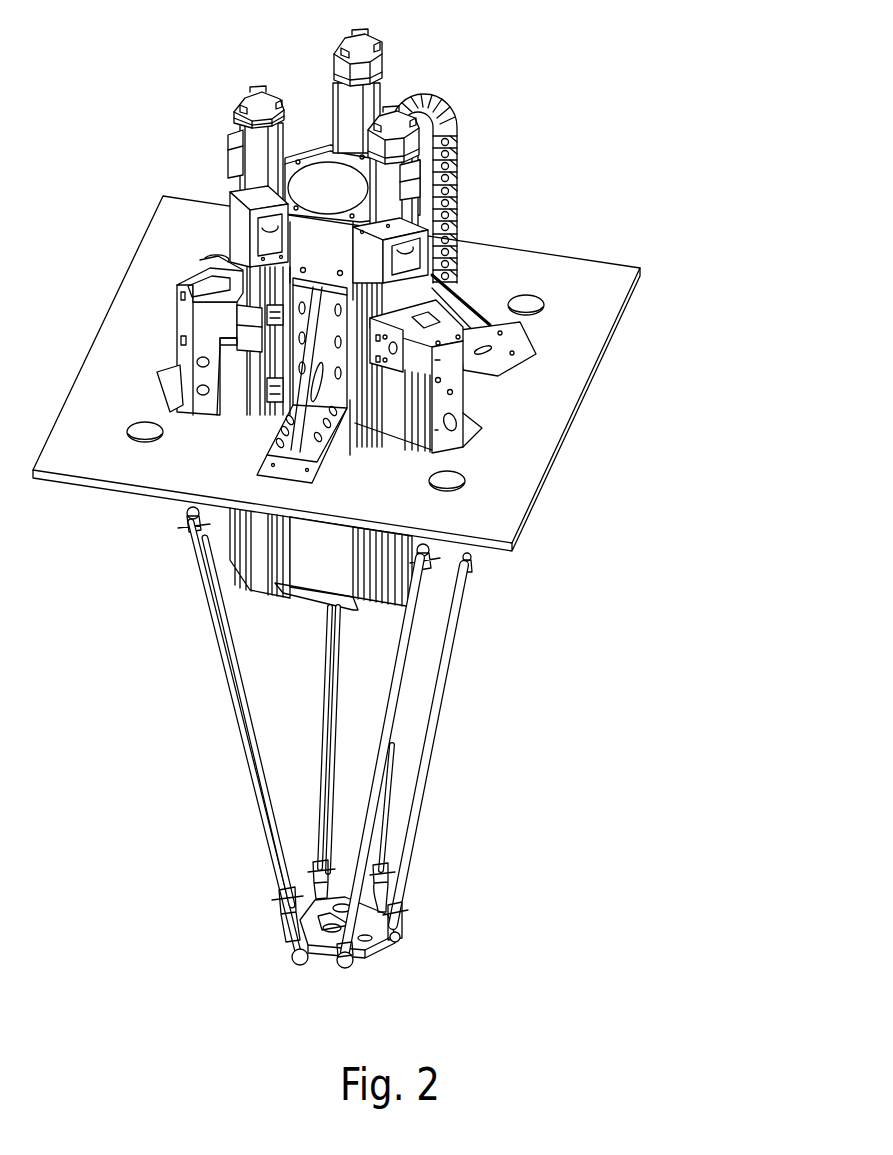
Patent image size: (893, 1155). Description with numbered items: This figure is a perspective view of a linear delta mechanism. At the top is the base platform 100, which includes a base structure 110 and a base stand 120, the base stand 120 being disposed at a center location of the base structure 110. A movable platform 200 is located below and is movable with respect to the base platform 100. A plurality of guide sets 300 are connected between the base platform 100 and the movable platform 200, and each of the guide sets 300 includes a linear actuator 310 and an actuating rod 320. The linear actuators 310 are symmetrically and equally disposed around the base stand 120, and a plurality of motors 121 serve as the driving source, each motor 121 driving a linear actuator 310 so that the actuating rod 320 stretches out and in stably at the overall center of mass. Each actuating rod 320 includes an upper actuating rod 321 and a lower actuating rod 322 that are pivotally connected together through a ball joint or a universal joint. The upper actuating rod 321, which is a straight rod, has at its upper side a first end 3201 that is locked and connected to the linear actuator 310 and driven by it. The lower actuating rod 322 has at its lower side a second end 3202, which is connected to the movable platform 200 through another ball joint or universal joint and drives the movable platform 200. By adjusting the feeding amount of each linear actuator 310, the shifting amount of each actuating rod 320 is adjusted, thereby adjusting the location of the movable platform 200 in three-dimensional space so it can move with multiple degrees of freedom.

The base platform 100 is at (264, 12).
The base structure 110 is at (164, 213).
The base stand 120 is at (312, 150).
The motor 121 is at (440, 215).
The guide set 300 is at (736, 318).
The linear actuator 310 is at (407, 283).
The actuating rod 320 is at (661, 431).
The upper actuating rod 321 is at (450, 378).
The first end 3201 is at (413, 353).
The lower actuating rod 322 is at (430, 775).
The second end 3202 is at (348, 963).
The movable platform 200 is at (307, 923).